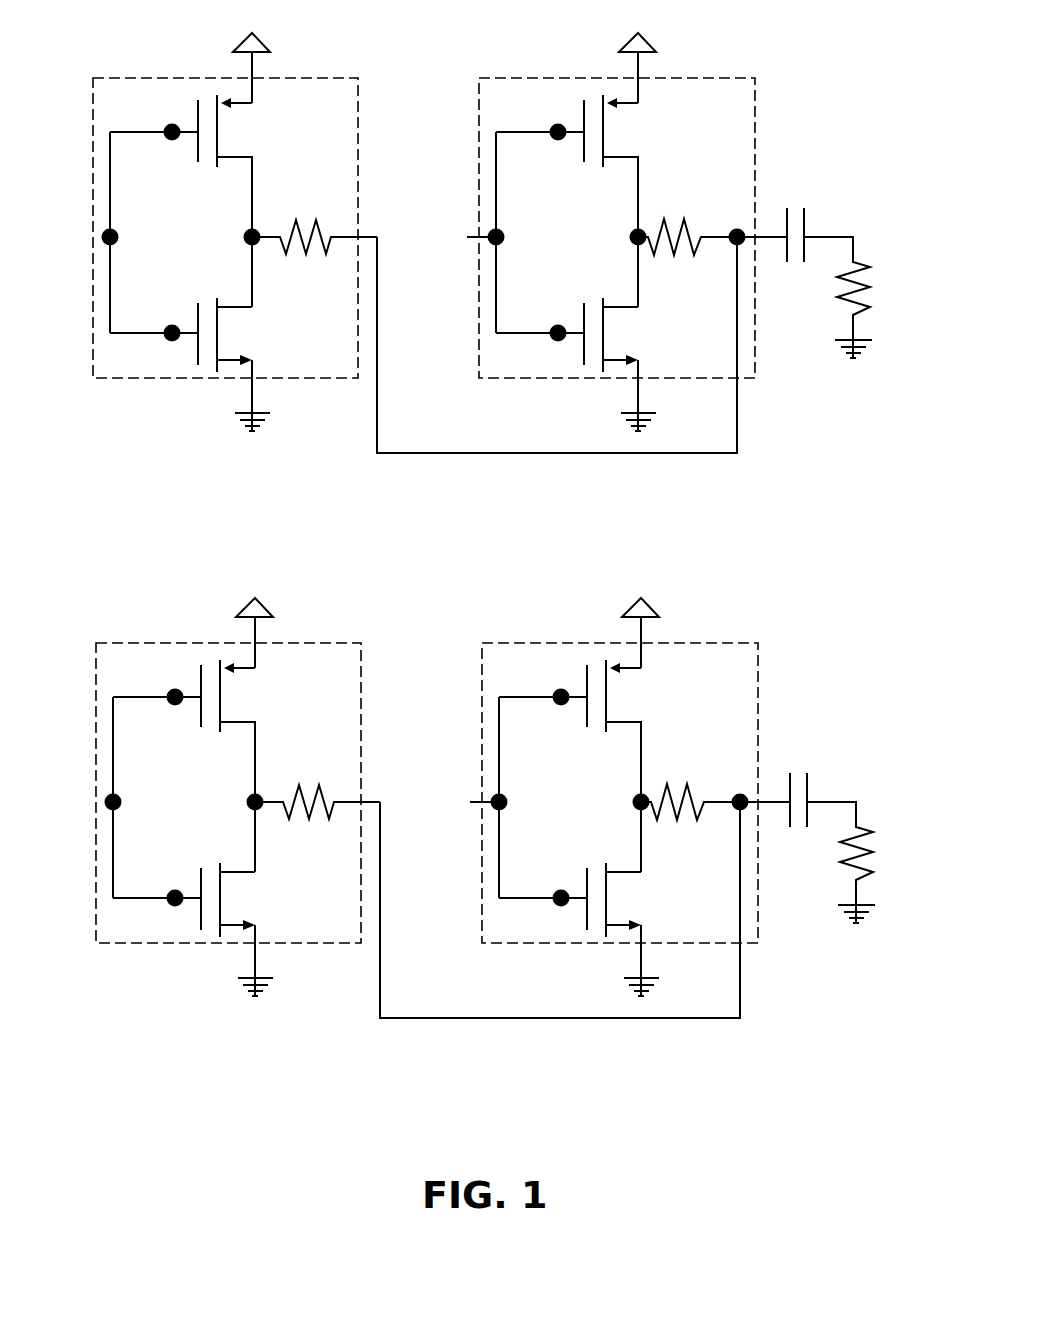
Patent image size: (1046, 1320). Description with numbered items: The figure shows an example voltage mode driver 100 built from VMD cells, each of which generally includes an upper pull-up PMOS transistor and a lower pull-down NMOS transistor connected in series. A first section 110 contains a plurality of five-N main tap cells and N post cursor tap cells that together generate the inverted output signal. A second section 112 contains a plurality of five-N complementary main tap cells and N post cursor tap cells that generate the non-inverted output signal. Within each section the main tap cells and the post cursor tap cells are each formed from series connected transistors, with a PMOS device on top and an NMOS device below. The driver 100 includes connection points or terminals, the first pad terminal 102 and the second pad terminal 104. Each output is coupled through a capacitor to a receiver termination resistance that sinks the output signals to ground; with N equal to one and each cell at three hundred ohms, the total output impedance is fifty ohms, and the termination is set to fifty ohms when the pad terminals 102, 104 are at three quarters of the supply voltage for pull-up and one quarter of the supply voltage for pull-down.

The voltage mode driver 100 is at (175, 1152).
The first section 110 is at (135, 445).
The second section 112 is at (464, 757).
The VPAD terminal 102 is at (688, 208).
The VPAD1 terminal 104 is at (691, 773).